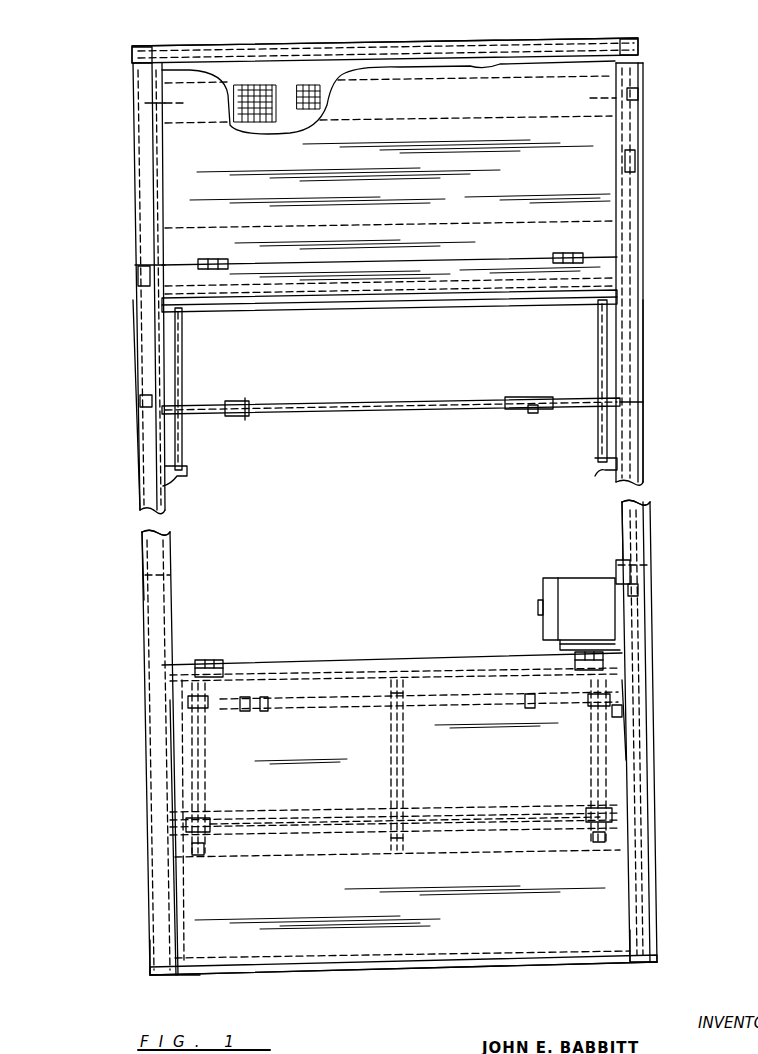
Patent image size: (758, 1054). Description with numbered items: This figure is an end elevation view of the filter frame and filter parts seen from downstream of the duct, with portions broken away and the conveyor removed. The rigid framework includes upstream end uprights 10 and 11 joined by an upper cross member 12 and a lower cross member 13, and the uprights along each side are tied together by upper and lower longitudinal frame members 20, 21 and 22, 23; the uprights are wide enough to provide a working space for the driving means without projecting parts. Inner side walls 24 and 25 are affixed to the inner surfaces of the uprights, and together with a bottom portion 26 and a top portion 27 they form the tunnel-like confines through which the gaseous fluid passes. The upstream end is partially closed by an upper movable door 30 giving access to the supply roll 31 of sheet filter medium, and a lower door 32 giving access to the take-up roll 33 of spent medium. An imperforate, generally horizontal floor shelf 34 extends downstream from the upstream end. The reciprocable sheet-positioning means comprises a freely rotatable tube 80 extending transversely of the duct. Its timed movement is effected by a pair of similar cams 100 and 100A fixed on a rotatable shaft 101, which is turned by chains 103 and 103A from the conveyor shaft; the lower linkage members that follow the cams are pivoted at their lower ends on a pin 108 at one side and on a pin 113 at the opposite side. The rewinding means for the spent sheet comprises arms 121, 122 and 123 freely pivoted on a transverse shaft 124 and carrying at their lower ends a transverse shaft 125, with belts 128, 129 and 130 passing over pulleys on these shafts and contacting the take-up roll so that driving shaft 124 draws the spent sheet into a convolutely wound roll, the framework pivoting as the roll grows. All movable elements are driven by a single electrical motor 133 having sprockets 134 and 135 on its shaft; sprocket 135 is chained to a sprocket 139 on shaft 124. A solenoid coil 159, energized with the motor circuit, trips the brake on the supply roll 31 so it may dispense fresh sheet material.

The upstream end upright 10 is at (640, 535).
The upstream end upright 11 is at (158, 545).
The upper cross member 12 is at (470, 46).
The lower cross member 13 is at (355, 975).
The upper longitudinal frame member 20 is at (640, 45).
The upper longitudinal frame member 21 is at (133, 70).
The lower longitudinal frame member 22 is at (650, 950).
The lower longitudinal frame member 23 is at (150, 965).
The inner side wall 24 is at (620, 513).
The inner side wall 25 is at (162, 595).
The bottom portion 26 is at (510, 963).
The top portion 27 is at (285, 45).
The upper movable door 30 is at (165, 150).
The supply roll 31 is at (288, 97).
The lower door 32 is at (180, 878).
The take-up roll 33 is at (345, 857).
The floor shelf 34 is at (373, 658).
The freely rotatable tube 80 is at (352, 310).
The cam 100 is at (598, 372).
The cam 100A is at (180, 362).
The rotatable shaft 101 is at (315, 404).
The chain 103 is at (632, 375).
The chain 103A is at (140, 380).
The pin 108 is at (610, 462).
The pin 113 is at (185, 480).
The arm 121 is at (597, 740).
The arm 122 is at (403, 775).
The arm 123 is at (200, 750).
The transverse shaft 124 is at (295, 708).
The transverse shaft 125 is at (440, 823).
The belt 128 is at (595, 790).
The belt 129 is at (390, 745).
The belt 130 is at (205, 790).
The electrical motor 133 is at (560, 590).
The sprocket 134 is at (632, 575).
The sprocket 135 is at (640, 590).
The sprocket 139 is at (645, 710).
The solenoid coil 159 is at (630, 182).